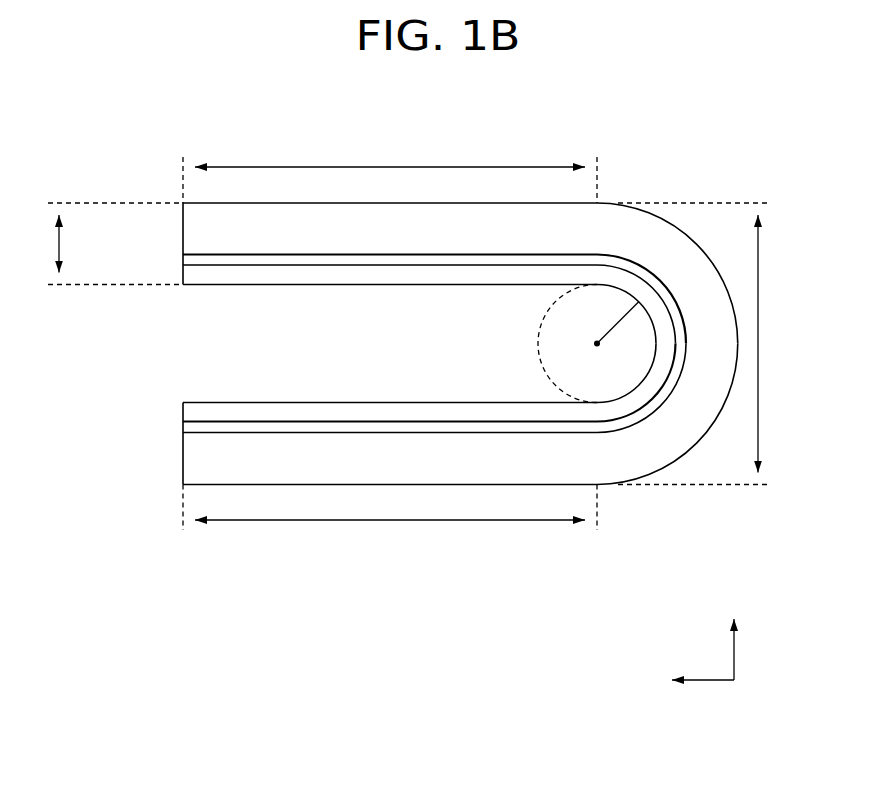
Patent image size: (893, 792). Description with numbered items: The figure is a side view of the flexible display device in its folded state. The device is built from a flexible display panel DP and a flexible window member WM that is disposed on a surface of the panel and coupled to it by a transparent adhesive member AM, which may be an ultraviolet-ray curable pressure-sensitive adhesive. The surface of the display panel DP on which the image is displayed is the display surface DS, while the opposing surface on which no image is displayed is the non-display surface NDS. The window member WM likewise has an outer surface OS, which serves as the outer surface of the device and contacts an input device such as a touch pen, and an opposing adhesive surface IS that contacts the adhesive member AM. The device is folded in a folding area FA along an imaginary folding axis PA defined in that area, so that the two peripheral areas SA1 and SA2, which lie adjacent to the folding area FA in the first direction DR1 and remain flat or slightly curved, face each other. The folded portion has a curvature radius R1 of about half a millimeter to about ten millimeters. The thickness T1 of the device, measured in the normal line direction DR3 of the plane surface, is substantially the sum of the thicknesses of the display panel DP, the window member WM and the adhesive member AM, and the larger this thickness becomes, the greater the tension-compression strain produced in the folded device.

The flexible display panel DP is at (189, 224).
The adhesive member AM is at (189, 257).
The flexible window member WM is at (189, 273).
The outer surface OS is at (220, 401).
The adhesive surface IS is at (207, 440).
The display surface DS is at (207, 440).
The non-display surface NDS is at (208, 482).
The folding axis PA is at (595, 346).
The curvature radius R1 is at (613, 322).
The thickness T1 is at (105, 244).
The peripheral area SA1 is at (390, 518).
The peripheral area SA2 is at (390, 170).
The folding area FA is at (704, 344).
The first direction DR1 is at (678, 680).
The normal line direction DR3 is at (733, 632).